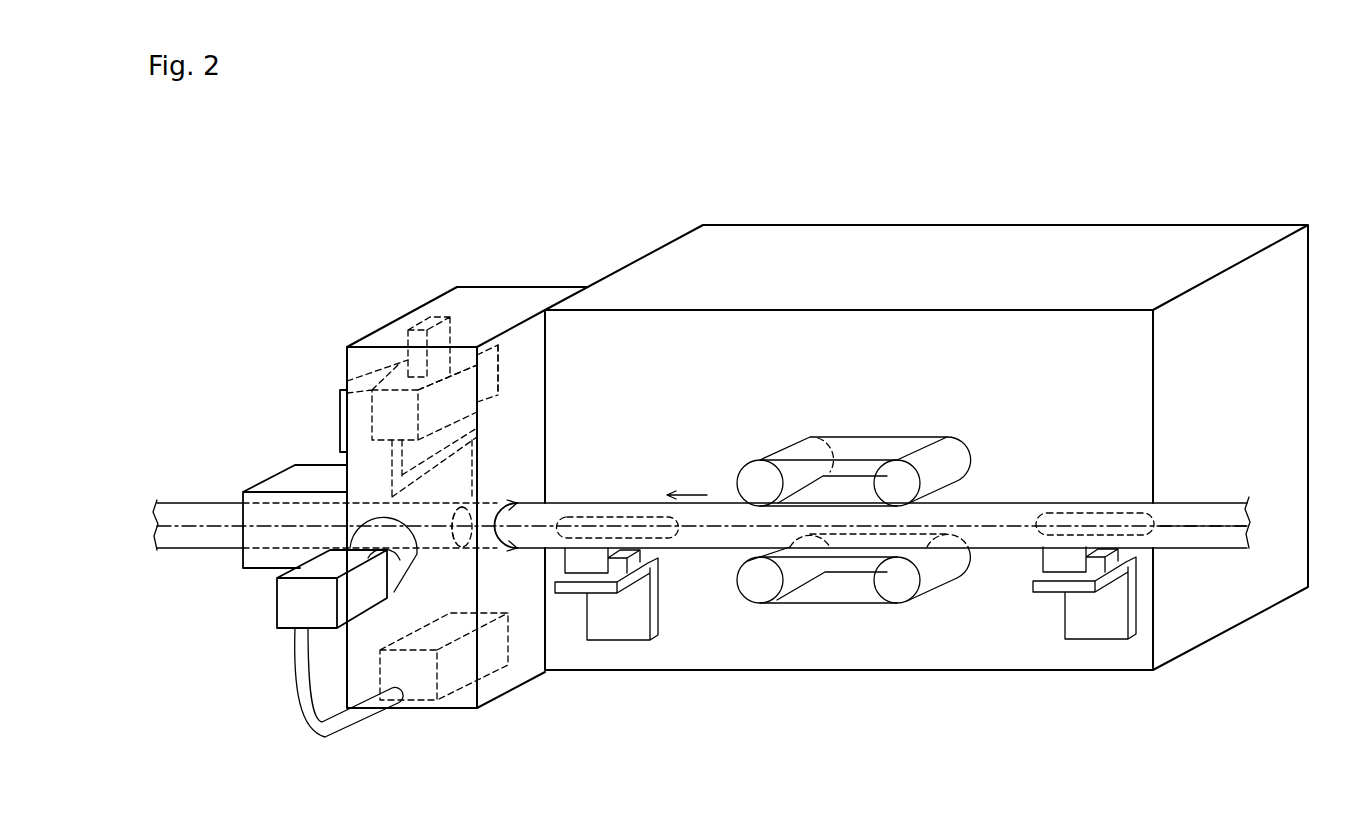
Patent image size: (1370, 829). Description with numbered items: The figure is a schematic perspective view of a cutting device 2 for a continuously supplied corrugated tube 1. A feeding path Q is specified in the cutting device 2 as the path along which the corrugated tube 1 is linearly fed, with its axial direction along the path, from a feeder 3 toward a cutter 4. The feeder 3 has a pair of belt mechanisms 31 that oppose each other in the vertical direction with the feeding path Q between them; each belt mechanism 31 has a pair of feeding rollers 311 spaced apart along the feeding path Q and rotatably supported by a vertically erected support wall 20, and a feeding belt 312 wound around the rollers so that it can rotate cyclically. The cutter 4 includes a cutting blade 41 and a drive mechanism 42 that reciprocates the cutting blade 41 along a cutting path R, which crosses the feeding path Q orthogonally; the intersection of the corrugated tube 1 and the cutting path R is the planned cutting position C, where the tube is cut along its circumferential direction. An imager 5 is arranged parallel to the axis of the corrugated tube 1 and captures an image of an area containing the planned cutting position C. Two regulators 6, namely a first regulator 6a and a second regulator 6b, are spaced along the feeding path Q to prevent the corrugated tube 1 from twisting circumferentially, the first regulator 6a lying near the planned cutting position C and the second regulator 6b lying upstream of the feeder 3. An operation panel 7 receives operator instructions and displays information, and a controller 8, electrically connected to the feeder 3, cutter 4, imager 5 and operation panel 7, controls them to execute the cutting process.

The corrugated tube 1 is at (993, 550).
The cutting device 2 is at (926, 398).
The support wall 20 is at (1128, 393).
The feeder 3 is at (871, 518).
The belt mechanism 31 is at (871, 518).
The feeding roller 311 is at (748, 477).
The feeding belt 312 is at (811, 452).
The cutter 4 is at (537, 345).
The cutting blade 41 is at (482, 420).
The drive mechanism 42 is at (490, 372).
The imager 5 is at (277, 612).
The regulator 6 is at (851, 642).
The first regulator 6a is at (617, 640).
The second regulator 6b is at (1093, 637).
The operation panel 7 is at (340, 420).
The controller 8 is at (463, 710).
The cutting path R is at (455, 510).
The planned cutting position C is at (517, 500).
The feeding path Q is at (1198, 527).